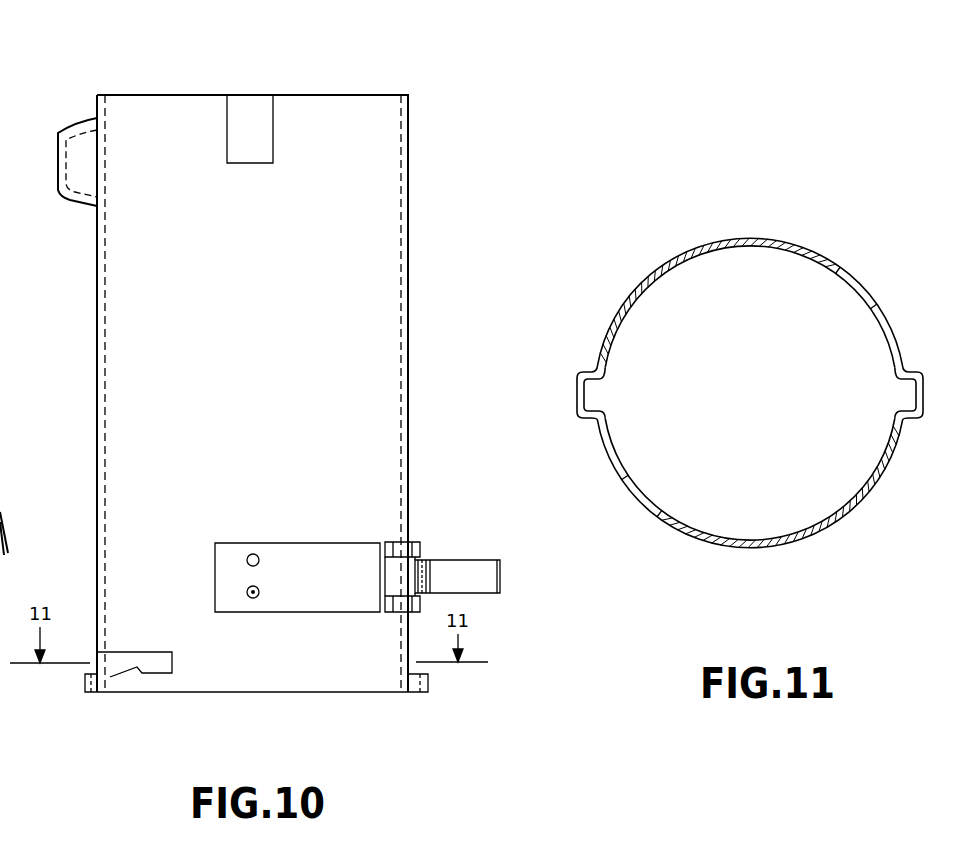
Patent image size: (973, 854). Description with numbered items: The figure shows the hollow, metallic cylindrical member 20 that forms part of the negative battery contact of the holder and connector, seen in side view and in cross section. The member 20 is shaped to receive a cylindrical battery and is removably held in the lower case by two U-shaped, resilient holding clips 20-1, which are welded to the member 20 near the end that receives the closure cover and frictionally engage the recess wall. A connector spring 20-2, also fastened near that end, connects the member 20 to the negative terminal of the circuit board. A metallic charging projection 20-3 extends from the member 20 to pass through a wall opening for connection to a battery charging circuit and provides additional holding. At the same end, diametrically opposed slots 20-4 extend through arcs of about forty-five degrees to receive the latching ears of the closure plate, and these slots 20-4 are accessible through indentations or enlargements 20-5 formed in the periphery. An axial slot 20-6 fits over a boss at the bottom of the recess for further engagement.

In FIG. 10, the cylindrical member 20 is at (380, 82).
In FIG. 11, the cylindrical member 20 is at (800, 236).
In FIG. 10, the holding clips 20-1 is at (420, 542).
In FIG. 10, the connector spring 20-2 is at (487, 560).
In FIG. 10, the charging projection 20-3 is at (57, 133).
In FIG. 10, the slots 20-4 is at (166, 670).
In FIG. 11, the slots 20-4 is at (862, 287).
In FIG. 10, the indentations or enlargements 20-5 is at (86, 693).
In FIG. 11, the indentations or enlargements 20-5 is at (577, 380).
In FIG. 10, the axial slot 20-6 is at (257, 108).